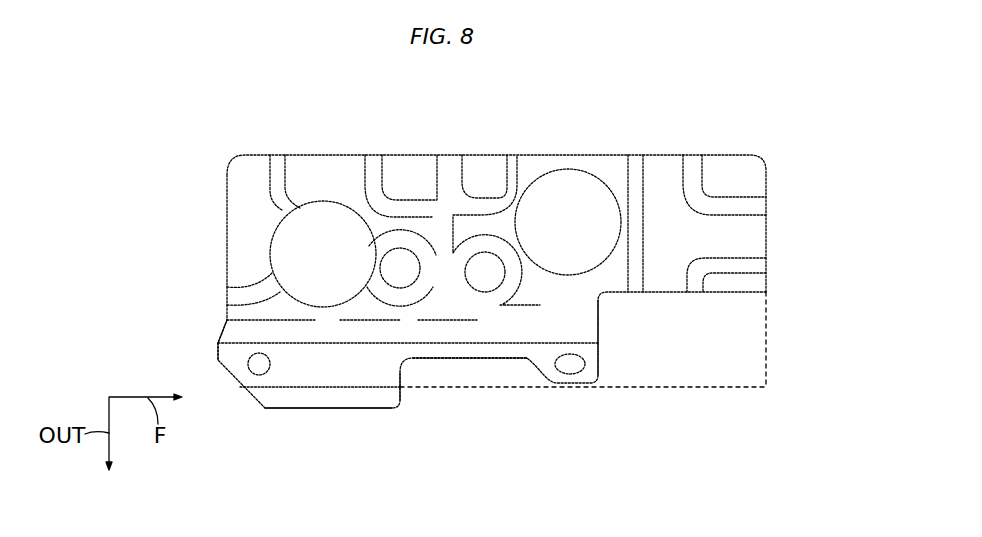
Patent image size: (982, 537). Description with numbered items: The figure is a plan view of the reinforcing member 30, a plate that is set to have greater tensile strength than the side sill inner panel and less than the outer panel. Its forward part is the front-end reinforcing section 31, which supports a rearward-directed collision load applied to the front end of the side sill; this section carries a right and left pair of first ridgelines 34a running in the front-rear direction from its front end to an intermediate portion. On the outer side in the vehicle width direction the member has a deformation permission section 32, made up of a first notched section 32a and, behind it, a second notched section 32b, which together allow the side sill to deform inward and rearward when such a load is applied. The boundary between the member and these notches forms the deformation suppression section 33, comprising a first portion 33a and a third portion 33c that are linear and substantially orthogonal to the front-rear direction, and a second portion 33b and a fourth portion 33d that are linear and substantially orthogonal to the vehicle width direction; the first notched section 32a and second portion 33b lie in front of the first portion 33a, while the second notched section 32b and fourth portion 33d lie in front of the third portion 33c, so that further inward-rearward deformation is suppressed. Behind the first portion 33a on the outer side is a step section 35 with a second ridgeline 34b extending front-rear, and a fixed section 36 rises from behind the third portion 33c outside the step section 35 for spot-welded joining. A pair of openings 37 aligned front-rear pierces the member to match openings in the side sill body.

The reinforcing member 30 is at (716, 127).
The front-end reinforcing section 31 is at (655, 157).
The deformation permission section 32 is at (640, 463).
The first notched section 32a is at (640, 360).
The second notched section 32b is at (488, 373).
The deformation suppression section 33 is at (681, 292).
The first portion 33a is at (598, 313).
The second portion 33b is at (723, 292).
The third portion 33c is at (400, 387).
The fourth portion 33d is at (466, 358).
The first ridgelines 34a is at (742, 254).
The second ridgeline 34b is at (222, 360).
The step section 35 is at (218, 332).
The fixed section 36 is at (325, 408).
The openings 37 is at (304, 206).